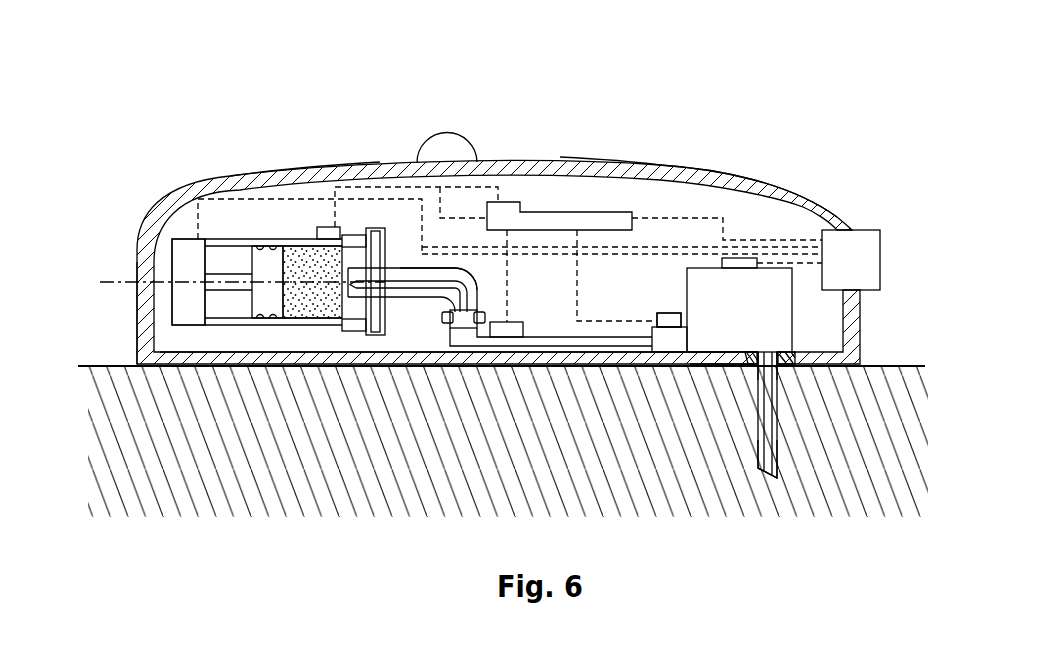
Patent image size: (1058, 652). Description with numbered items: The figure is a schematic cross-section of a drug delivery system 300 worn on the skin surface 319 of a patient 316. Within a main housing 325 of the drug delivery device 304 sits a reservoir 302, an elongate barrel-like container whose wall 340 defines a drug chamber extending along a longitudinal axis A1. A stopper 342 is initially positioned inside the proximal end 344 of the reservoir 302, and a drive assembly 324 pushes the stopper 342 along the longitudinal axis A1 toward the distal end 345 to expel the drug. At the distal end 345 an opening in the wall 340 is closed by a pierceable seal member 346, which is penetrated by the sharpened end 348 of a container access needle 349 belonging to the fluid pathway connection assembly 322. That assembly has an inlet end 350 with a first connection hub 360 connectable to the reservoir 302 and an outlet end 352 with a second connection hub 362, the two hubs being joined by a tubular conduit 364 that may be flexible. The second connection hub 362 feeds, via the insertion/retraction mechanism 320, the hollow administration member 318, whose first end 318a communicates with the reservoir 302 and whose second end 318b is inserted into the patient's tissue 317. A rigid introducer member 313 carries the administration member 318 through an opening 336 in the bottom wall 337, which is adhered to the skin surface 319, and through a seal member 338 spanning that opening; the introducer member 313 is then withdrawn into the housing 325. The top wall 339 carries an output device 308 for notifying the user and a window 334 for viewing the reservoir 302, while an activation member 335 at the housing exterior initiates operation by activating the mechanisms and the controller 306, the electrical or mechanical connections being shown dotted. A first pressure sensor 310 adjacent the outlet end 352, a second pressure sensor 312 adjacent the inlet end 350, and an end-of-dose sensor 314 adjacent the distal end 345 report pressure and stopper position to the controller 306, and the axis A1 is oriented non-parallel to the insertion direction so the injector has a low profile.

The drug delivery system 300 is at (859, 96).
The reservoir 302 is at (234, 275).
The drug delivery device 304 is at (857, 171).
The controller 306 is at (593, 209).
The output device 308 is at (447, 148).
The first pressure sensor 310 is at (674, 318).
The second pressure sensor 312 is at (501, 321).
The introducer member 313 is at (768, 441).
The end-of-dose sensor 314 is at (327, 227).
The patient 316 is at (90, 357).
The tissue 317 is at (808, 477).
The administration member 318 is at (780, 410).
The first end 318a is at (766, 352).
The second end 318b is at (779, 455).
The skin surface 319 is at (901, 360).
The insertion/retraction mechanism 320 is at (798, 307).
The fluid pathway connection assembly 322 is at (556, 318).
The drive assembly 324 is at (170, 315).
The main housing 325 is at (774, 168).
The window 334 is at (282, 169).
The activation member 335 is at (870, 247).
The opening 336 is at (747, 373).
The bottom wall 337 is at (576, 364).
The seal member 338 is at (790, 350).
The top wall 339 is at (683, 164).
The wall 340 is at (283, 239).
The stopper 342 is at (264, 319).
The proximal end 344 is at (227, 239).
The distal end 345 is at (356, 234).
The seal member 346 is at (357, 308).
The sharpened end 348 is at (359, 282).
The container access needle 349 is at (411, 289).
The inlet end 350 is at (483, 275).
The outlet end 352 is at (662, 311).
The first connection hub 360 is at (457, 269).
The second connection hub 362 is at (676, 341).
The tubular conduit 364 is at (544, 344).
The longitudinal axis A1 is at (107, 281).